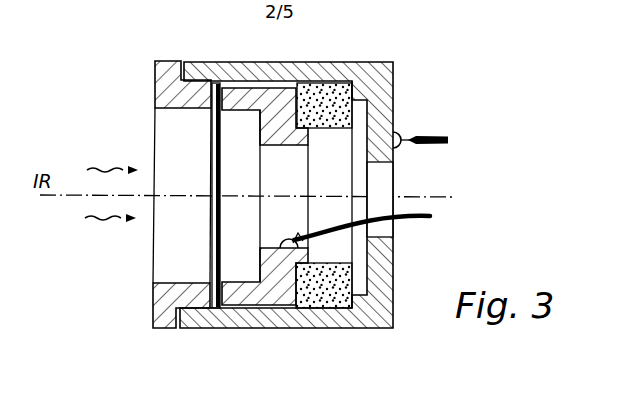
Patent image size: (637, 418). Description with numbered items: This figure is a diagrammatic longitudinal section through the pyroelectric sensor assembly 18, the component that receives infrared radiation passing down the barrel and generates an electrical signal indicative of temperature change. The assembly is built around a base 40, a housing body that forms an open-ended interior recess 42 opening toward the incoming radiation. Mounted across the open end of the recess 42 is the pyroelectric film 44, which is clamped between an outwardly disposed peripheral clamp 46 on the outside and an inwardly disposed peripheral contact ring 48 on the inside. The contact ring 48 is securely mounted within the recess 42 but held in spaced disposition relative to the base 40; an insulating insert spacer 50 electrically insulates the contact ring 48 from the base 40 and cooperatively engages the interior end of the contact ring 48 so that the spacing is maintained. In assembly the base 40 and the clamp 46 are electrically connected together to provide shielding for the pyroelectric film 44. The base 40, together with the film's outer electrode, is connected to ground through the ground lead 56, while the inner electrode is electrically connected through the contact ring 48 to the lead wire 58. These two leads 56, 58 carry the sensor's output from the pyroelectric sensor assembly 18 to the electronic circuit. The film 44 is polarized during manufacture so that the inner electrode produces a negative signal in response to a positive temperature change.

The pyroelectric sensor assembly 18 is at (110, 298).
The base 40 is at (394, 77).
The interior recess 42 is at (232, 308).
The pyroelectric film 44 is at (222, 200).
The peripheral clamp 46 is at (166, 58).
The peripheral contact ring 48 is at (311, 247).
The insulating insert spacer 50 is at (322, 92).
The ground lead 56 is at (450, 140).
The lead wire 58 is at (434, 216).